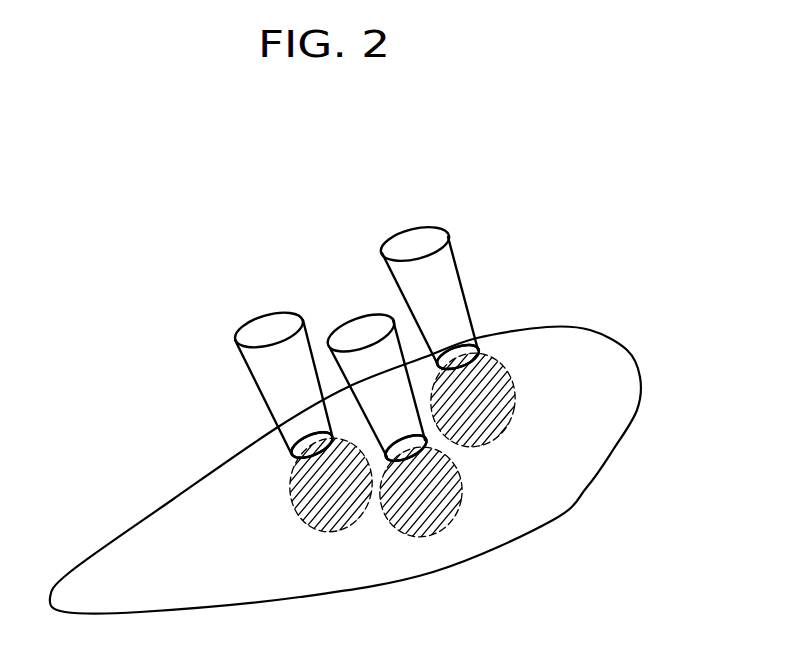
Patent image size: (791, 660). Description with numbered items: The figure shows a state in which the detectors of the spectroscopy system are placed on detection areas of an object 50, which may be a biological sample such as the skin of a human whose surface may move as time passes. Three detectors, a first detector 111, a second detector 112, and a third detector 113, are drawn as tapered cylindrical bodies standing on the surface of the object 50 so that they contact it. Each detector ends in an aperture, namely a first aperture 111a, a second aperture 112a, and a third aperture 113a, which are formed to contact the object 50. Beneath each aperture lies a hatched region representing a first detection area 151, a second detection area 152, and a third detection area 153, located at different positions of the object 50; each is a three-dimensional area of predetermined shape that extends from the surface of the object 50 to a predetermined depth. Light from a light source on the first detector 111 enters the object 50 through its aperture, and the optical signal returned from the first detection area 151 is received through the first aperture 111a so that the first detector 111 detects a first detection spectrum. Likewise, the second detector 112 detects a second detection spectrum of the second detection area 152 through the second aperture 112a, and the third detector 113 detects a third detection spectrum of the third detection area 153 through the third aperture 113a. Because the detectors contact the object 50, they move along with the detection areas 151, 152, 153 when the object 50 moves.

The object 50 is at (623, 367).
The first detector 111 is at (258, 367).
The second detector 112 is at (360, 353).
The third detector 113 is at (448, 268).
The first aperture 111a is at (287, 463).
The second aperture 112a is at (440, 478).
The third aperture 113a is at (497, 362).
The first detection area 151 is at (300, 505).
The second detection area 152 is at (425, 525).
The third detection area 153 is at (495, 422).